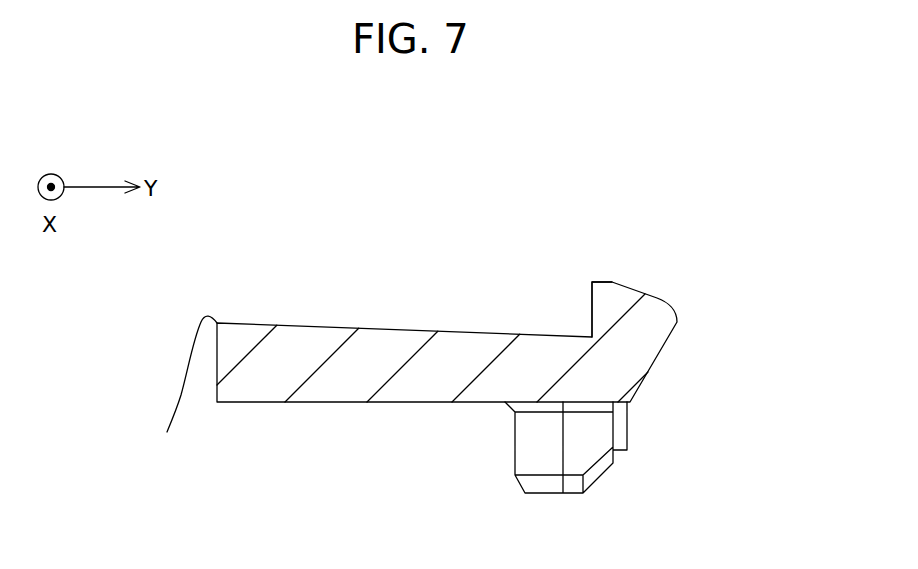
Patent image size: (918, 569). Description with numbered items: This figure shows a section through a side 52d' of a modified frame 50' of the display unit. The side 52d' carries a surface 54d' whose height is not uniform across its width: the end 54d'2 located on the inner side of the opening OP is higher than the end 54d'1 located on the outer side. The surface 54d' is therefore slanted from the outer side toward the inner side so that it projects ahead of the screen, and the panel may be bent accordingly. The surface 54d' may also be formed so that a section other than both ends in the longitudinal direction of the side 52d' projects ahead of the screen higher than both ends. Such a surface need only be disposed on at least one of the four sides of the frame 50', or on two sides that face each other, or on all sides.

The frame 50' is at (520, 342).
The surface 54d' is at (432, 317).
The end on the outer side 54d'1 is at (612, 272).
The end on the inner side of the opening 54d'2 is at (177, 390).
The side 52d' is at (515, 450).
The opening OP is at (148, 385).